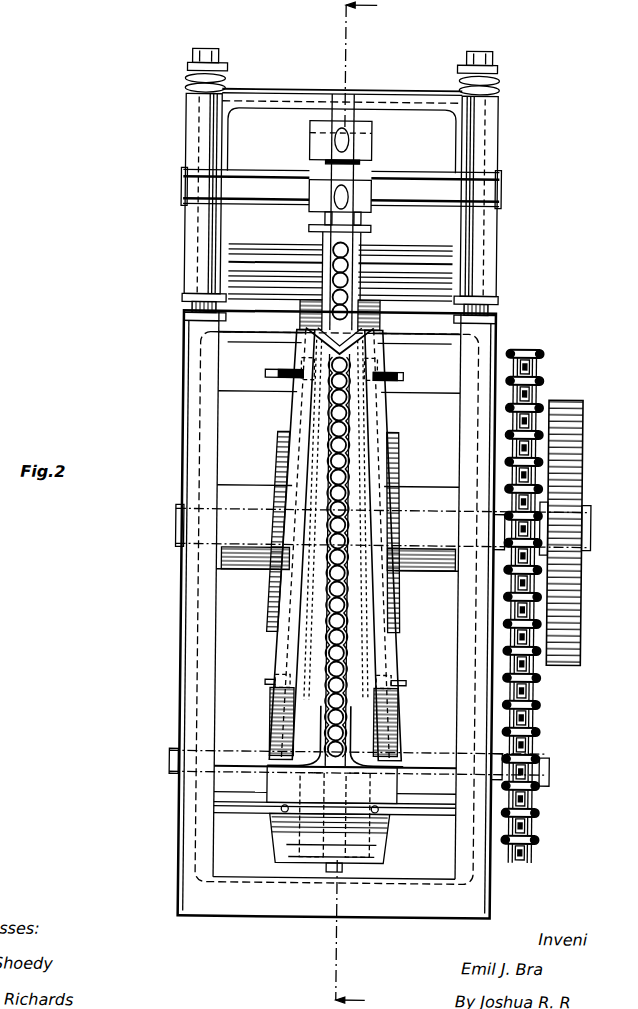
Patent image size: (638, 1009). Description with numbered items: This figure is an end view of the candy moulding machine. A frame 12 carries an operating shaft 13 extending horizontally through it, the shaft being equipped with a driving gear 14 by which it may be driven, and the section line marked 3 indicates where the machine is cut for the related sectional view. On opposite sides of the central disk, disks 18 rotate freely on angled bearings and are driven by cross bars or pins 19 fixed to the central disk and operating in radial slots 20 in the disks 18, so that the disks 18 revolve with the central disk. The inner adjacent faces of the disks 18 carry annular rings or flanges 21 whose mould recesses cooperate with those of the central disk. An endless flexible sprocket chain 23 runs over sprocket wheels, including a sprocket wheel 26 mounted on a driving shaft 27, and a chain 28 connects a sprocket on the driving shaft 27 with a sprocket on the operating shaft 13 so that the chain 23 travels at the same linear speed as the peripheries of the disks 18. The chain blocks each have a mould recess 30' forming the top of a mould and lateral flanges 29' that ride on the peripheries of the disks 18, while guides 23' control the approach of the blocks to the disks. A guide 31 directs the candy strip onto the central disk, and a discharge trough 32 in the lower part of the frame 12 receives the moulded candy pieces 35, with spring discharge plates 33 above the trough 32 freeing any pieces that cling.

The section line 3- 3 is at (365, 505).
The frame 12 is at (472, 422).
The operating shaft 13 is at (176, 531).
The driving gear 14 is at (577, 490).
The disks 18 is at (296, 418).
The cross bars or pins 19 is at (278, 374).
The radial slots 20 is at (384, 370).
The annular rings or flanges 21 is at (376, 613).
The endless flexible sprocket chain 23 is at (341, 179).
The guides 23' is at (340, 258).
The sprocket wheel 26 is at (535, 745).
The driving shaft 27 is at (546, 771).
The chain 28 is at (538, 607).
The lateral flanges 29' is at (353, 140).
The mould recess 30' is at (365, 187).
The guide 31 is at (372, 334).
The discharge trough 32 is at (380, 851).
The spring discharge plates 33 is at (378, 721).
The moulded candy pieces 35 is at (292, 723).